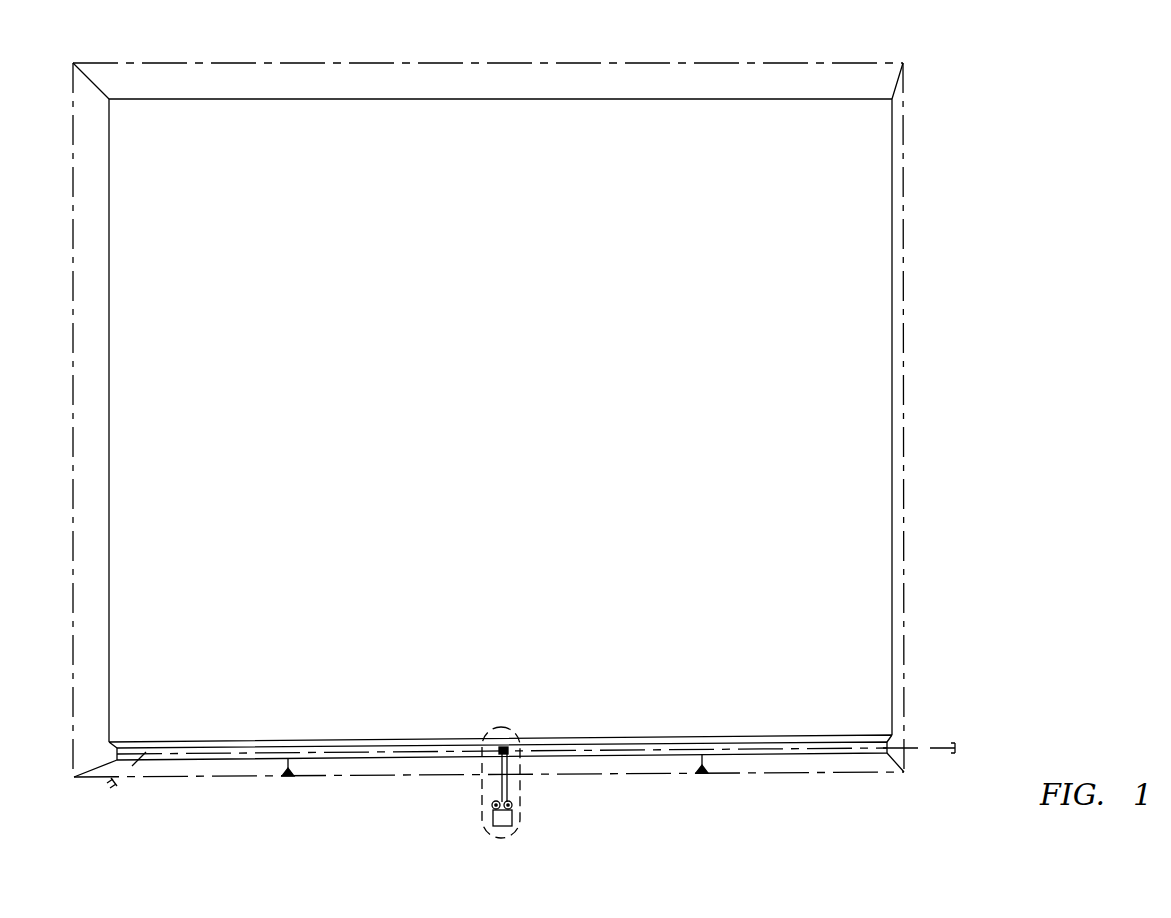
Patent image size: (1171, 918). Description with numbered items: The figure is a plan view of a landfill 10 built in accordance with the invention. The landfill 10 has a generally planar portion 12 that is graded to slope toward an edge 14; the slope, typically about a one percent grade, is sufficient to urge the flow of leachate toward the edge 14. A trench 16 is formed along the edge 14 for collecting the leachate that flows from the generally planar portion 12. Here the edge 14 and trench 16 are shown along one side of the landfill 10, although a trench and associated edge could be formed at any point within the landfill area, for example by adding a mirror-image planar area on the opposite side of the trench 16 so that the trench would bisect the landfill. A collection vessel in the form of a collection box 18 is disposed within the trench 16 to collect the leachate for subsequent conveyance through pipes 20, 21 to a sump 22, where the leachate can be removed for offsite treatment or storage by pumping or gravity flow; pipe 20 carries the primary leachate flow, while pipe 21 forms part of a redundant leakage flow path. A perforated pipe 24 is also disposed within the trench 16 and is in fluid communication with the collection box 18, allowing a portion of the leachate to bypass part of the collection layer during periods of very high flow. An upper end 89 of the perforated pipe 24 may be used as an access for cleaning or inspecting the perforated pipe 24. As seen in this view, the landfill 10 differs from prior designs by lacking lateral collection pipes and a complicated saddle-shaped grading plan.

The landfill 10 is at (1010, 580).
The generally planar portion 12 is at (520, 477).
The edge 14 is at (738, 736).
The trench 16 is at (650, 743).
The collection box 18 is at (499, 746).
The pipe 20 is at (502, 783).
The pipe 21 is at (507, 783).
The sump 22 is at (495, 812).
The perforated pipe 24 is at (567, 752).
The upper end 89 is at (115, 786).